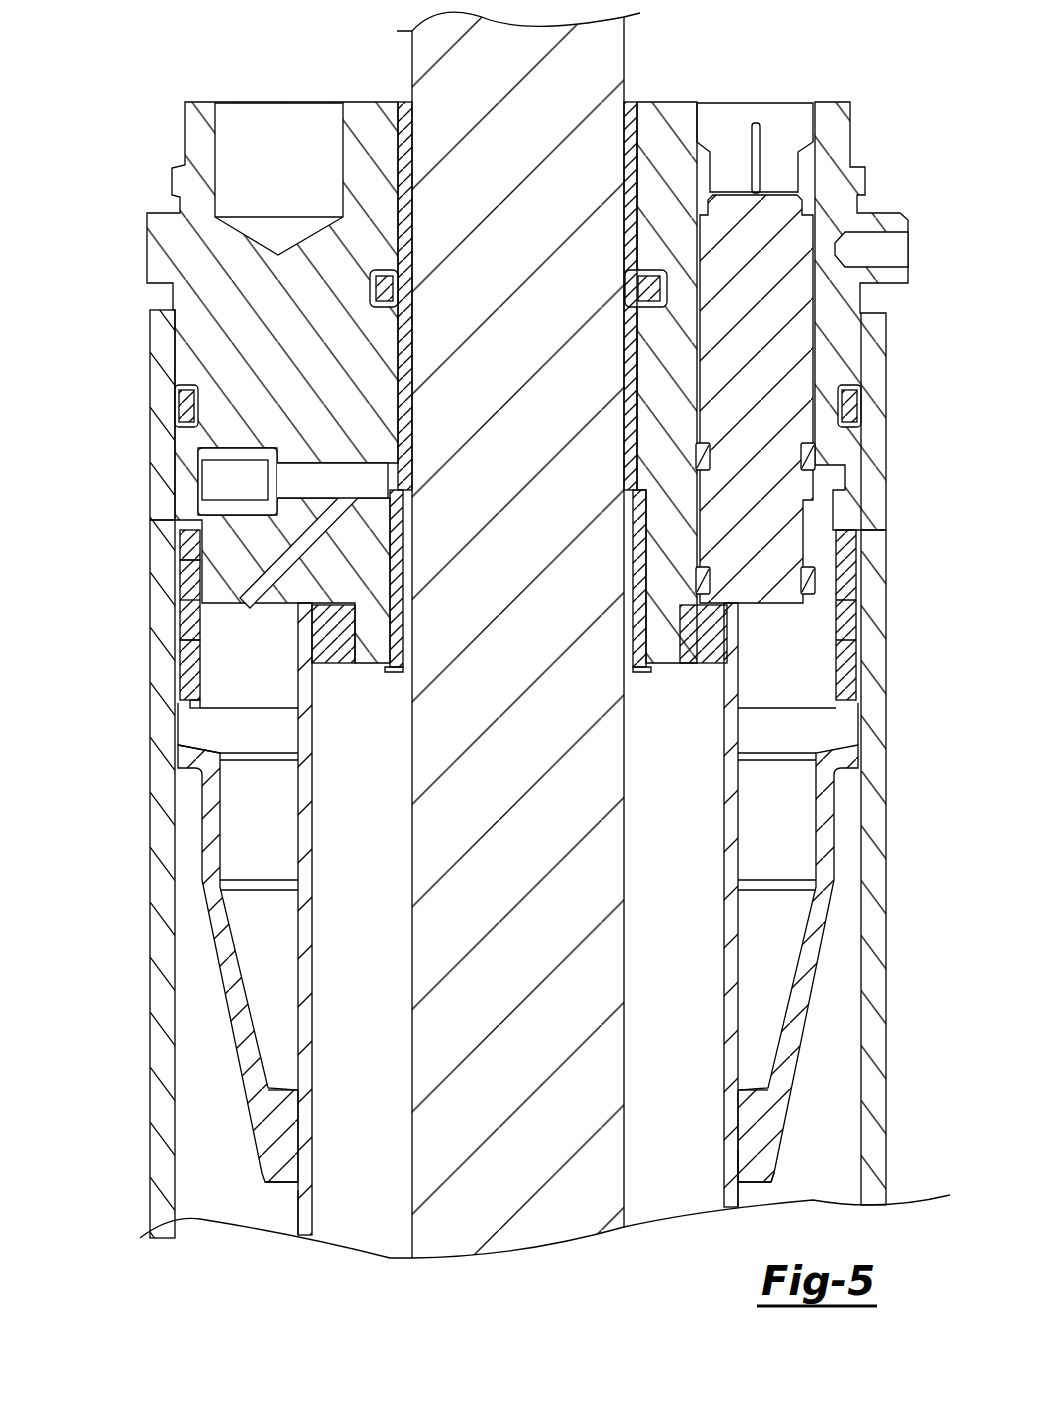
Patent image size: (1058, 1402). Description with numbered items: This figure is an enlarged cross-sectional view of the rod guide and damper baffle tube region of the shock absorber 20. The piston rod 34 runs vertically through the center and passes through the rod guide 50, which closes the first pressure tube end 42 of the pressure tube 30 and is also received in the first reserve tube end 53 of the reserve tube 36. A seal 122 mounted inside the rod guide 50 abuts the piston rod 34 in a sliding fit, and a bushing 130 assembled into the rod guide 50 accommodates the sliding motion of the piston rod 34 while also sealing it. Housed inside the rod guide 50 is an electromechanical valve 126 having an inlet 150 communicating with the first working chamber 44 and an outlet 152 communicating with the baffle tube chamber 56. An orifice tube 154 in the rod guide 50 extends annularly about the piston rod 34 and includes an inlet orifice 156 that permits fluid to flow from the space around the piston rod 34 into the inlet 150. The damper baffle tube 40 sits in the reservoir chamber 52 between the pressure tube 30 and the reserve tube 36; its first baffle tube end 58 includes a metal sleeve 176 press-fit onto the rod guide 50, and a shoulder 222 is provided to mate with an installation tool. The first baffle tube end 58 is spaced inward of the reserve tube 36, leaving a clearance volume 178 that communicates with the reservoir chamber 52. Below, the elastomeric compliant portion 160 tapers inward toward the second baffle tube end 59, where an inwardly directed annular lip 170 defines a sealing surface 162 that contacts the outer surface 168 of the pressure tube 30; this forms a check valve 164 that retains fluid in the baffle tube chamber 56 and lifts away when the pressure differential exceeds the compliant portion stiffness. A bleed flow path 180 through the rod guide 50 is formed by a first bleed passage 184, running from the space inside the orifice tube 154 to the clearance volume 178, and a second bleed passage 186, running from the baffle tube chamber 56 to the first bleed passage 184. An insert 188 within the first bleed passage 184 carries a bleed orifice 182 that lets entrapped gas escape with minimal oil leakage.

The shock absorber 20 is at (131, 82).
The piston rod 34 is at (585, 75).
The rod guide 50 is at (190, 245).
The seal 122 is at (345, 230).
The electromechanical valve 126 is at (750, 330).
The first reserve tube end 53 is at (165, 340).
The bushing 130 is at (390, 360).
The bleed flow path 180 is at (326, 462).
The first bleed passage 184 is at (377, 477).
The insert 188 is at (230, 455).
The inlet 150 is at (677, 530).
The bleed orifice 182 is at (275, 490).
The inlet orifice 156 is at (637, 552).
The first baffle tube end 58 is at (190, 545).
The metal sleeve 176 is at (190, 660).
The orifice tube 154 is at (397, 603).
The second bleed passage 186 is at (275, 570).
The outlet 152 is at (775, 635).
The clearance volume 178 is at (190, 690).
The first pressure tube end 42 is at (330, 655).
The shoulder 222 is at (190, 768).
The damper baffle tube 40 is at (210, 835).
The baffle tube chamber 56 is at (760, 847).
The pressure tube 30 is at (302, 983).
The compliant portion 160 is at (800, 980).
The sealing surface 162 is at (298, 1135).
The annular lip 170 is at (748, 1135).
The check valve 164 is at (792, 1118).
The reserve tube 36 is at (163, 1100).
The reservoir chamber 52 is at (215, 1180).
The second baffle tube end 59 is at (765, 1170).
The first working chamber 44 is at (660, 1175).
The outer surface 168 is at (298, 1210).